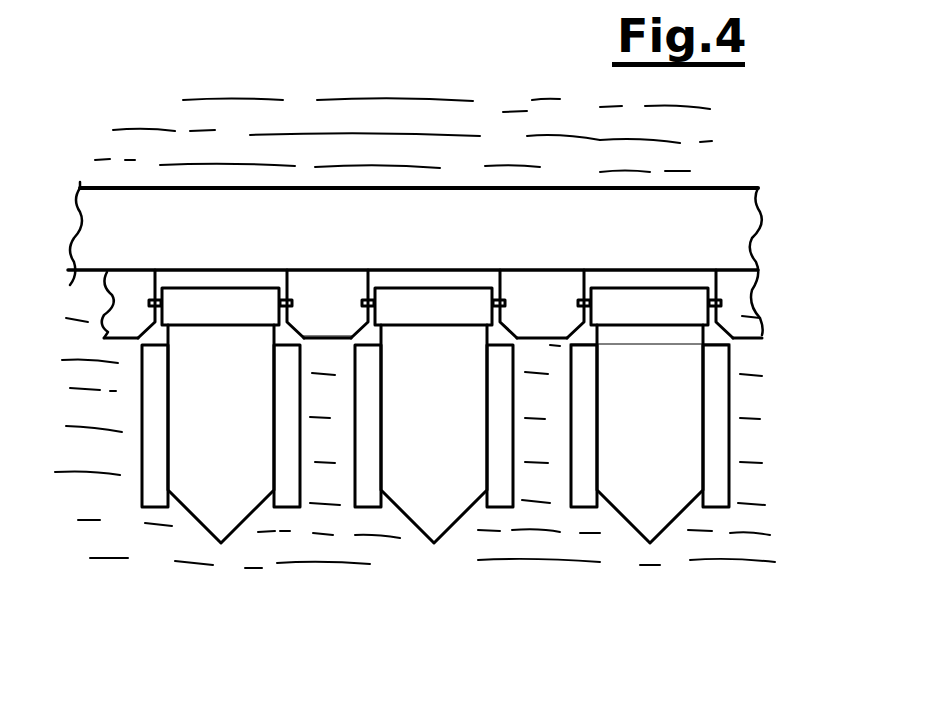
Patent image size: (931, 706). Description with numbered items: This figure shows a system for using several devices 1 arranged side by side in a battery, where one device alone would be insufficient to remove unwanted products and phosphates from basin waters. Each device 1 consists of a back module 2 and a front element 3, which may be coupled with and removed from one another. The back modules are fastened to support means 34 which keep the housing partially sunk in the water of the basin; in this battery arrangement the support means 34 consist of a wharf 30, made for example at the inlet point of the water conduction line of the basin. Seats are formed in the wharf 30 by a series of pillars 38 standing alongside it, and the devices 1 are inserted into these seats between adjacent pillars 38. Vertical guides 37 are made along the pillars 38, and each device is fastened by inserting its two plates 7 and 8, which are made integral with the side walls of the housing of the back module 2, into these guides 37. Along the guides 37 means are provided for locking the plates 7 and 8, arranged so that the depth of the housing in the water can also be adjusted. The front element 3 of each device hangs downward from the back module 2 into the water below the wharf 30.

The device 1 is at (740, 358).
The back module 2 is at (415, 300).
The front element 3 is at (423, 518).
The plate 7 is at (362, 300).
The plate 8 is at (517, 298).
The wharf 30 is at (723, 213).
The support means 34 is at (40, 183).
The guide 37 is at (146, 300).
The pillar 38 is at (318, 300).